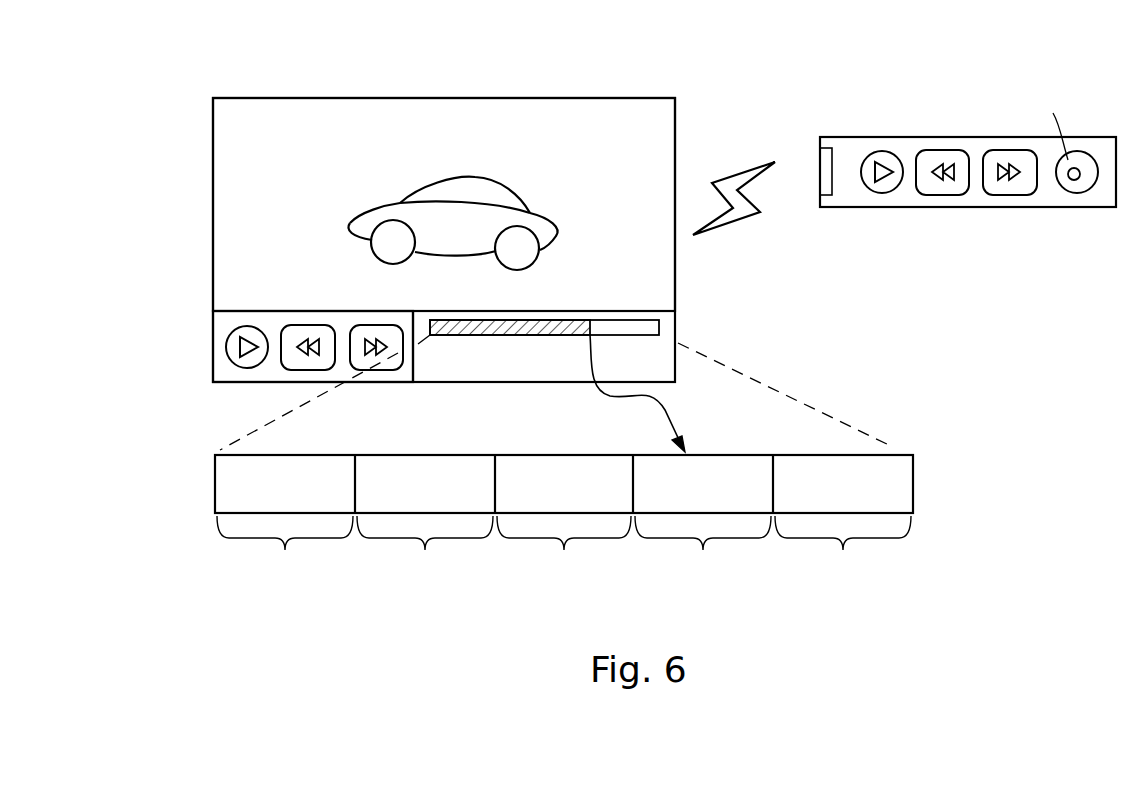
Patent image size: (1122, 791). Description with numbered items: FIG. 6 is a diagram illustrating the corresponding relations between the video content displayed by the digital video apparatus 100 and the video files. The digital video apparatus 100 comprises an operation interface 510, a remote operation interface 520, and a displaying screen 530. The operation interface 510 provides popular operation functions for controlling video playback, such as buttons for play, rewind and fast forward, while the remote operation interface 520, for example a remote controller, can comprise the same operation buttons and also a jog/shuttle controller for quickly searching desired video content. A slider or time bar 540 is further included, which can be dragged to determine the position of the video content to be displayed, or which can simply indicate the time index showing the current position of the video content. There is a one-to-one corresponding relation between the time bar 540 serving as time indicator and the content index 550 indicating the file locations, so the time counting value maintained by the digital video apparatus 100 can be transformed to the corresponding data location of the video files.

The digital video apparatus 100 is at (265, 82).
The operation interface 510 is at (221, 326).
The remote operation interface 520 is at (975, 207).
The displaying screen 530 is at (218, 177).
The time bar 540 is at (668, 328).
The content index 550 is at (903, 478).